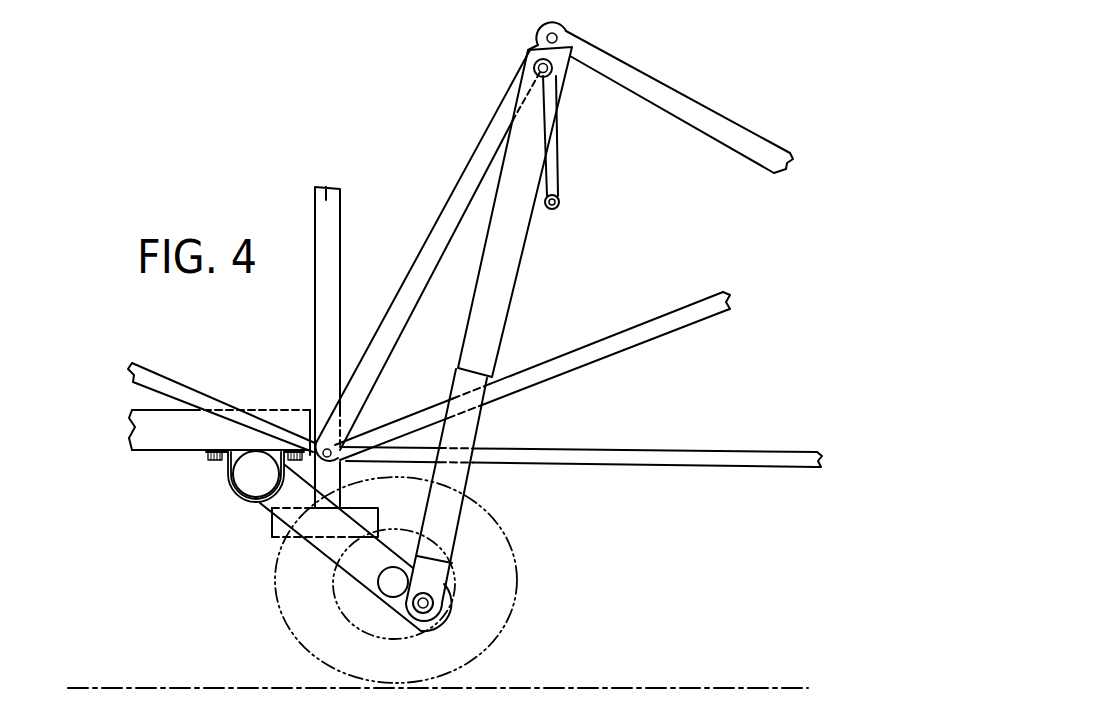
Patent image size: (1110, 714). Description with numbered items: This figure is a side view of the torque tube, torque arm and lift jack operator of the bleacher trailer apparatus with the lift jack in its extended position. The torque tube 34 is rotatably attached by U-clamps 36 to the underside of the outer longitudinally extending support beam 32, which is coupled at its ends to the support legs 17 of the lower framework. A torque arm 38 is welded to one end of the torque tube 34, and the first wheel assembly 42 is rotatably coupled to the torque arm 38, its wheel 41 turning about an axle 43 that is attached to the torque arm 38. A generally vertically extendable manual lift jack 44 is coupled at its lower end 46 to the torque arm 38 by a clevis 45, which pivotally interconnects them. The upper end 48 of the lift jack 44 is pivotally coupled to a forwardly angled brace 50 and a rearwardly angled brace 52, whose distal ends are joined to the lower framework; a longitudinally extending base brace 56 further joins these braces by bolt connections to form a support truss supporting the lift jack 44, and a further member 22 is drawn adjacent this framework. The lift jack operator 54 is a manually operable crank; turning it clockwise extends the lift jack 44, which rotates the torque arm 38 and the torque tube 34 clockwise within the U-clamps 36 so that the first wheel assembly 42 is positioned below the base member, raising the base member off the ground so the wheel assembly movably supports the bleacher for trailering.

The support leg 17 is at (327, 198).
The arm bar 22 is at (685, 308).
The outer longitudinally extending support beam 32 is at (148, 428).
The torque tube 34 is at (257, 473).
The U-clamp 36 is at (210, 470).
The torque arm 38 is at (213, 545).
The wheel 41 is at (490, 560).
The first wheel assembly 42 is at (567, 662).
The axle 43 is at (393, 585).
The manual lift jack 44 is at (500, 297).
The clevis 45 is at (448, 608).
The lower end 46 is at (447, 582).
The upper end 48 is at (638, 42).
The forwardly angled brace 50 is at (720, 132).
The rearwardly angled brace 52 is at (468, 187).
The lift jack operator 54 is at (553, 182).
The longitudinally extending base brace 56 is at (762, 458).